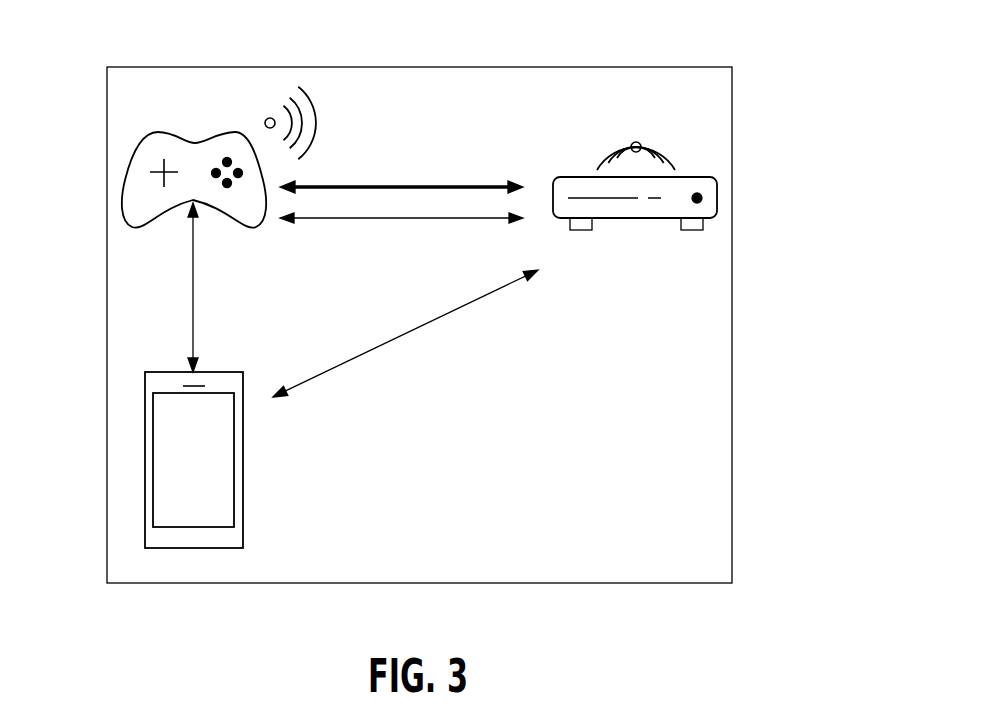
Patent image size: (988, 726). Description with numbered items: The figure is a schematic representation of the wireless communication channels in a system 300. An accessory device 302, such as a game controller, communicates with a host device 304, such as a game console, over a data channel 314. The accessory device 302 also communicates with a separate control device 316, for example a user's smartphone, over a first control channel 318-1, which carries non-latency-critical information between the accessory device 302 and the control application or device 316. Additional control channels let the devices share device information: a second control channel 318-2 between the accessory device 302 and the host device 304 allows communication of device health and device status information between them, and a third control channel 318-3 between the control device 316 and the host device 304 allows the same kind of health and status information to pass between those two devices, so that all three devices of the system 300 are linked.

The system 300 is at (583, 41).
The accessory device 302 is at (122, 205).
The host device 304 is at (645, 220).
The data channel 314 is at (407, 185).
The control device 316 is at (145, 455).
The first control channel 318-1 is at (193, 297).
The second control channel 318-2 is at (406, 220).
The third control channel 318-3 is at (415, 330).